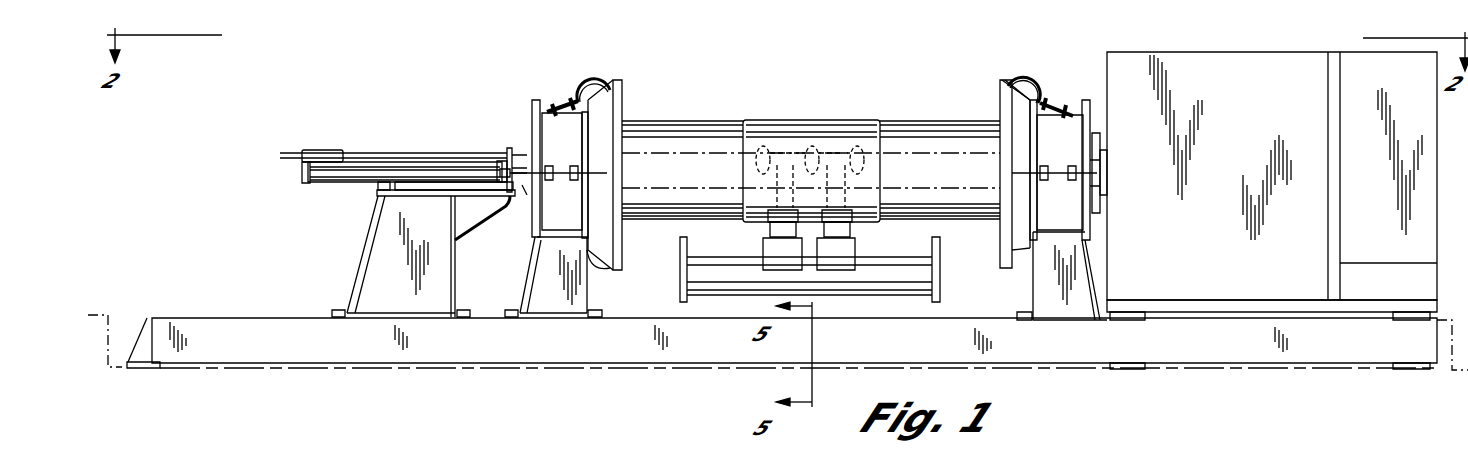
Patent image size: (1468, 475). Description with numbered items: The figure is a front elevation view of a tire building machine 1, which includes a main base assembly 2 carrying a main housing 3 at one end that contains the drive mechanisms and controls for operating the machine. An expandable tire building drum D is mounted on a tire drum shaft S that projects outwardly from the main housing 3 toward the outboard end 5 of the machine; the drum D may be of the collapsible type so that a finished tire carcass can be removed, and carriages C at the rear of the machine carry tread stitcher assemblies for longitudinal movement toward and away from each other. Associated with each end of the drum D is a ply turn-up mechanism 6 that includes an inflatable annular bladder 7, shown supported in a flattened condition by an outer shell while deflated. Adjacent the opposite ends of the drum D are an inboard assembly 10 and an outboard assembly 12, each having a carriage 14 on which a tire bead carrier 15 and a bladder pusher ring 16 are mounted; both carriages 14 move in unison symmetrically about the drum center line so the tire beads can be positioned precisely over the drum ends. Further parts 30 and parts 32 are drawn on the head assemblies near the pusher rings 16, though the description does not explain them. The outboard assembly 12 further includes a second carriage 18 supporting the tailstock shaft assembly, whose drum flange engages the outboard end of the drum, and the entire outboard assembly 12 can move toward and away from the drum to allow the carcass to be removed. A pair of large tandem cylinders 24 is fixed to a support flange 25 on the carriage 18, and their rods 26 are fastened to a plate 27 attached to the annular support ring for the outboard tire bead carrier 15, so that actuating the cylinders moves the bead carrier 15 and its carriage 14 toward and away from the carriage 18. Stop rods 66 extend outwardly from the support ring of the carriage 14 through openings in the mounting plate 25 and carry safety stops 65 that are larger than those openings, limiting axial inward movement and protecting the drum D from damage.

The tire building machine 1 is at (722, 97).
The main base assembly 2 is at (1047, 364).
The main housing 3 is at (1219, 50).
The outboard end 5 is at (403, 141).
The ply turn-up mechanism 6 is at (702, 120).
The inflatable annular air bag or bladder 7 is at (668, 216).
The inboard assembly 10 is at (1020, 72).
The outboard assembly 12 is at (578, 76).
The carriage 14 is at (533, 270).
The tire bead carrier 15 is at (582, 145).
The bladder pusher ring 16 is at (614, 92).
The second carriage 18 is at (375, 245).
The tandem cylinders 24 is at (340, 183).
The support flange 25 is at (497, 158).
The rods 26 is at (1105, 178).
The plate 27 is at (532, 125).
The ring 30 is at (597, 78).
The bolt 32 is at (561, 100).
The safety stops 65 is at (330, 154).
The stop rods 66 is at (395, 152).
The tire drum shaft S is at (1098, 140).
The expandable tire building drum D is at (828, 119).
The carriages C is at (763, 245).